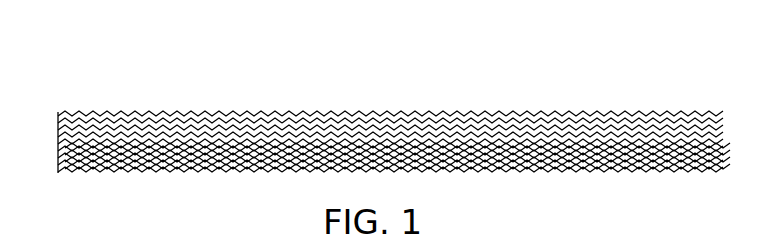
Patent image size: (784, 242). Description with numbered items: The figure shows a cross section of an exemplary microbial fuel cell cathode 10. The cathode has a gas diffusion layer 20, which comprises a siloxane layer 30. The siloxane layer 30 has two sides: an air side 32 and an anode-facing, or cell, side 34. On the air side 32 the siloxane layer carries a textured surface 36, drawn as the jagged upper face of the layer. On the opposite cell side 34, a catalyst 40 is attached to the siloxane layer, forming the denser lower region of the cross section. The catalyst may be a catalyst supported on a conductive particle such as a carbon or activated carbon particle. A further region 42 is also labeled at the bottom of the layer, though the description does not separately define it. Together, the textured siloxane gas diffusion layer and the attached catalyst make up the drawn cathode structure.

The microbial fuel cell cathode 10 is at (155, 78).
The gas diffusion layer 20 is at (633, 120).
The siloxane layer 30 is at (73, 124).
The air side 32 is at (543, 118).
The anode-facing (cell) side 34 is at (620, 143).
The textured surface 36 is at (453, 117).
The catalyst 40 is at (88, 160).
The bottom layer region 42 is at (170, 160).